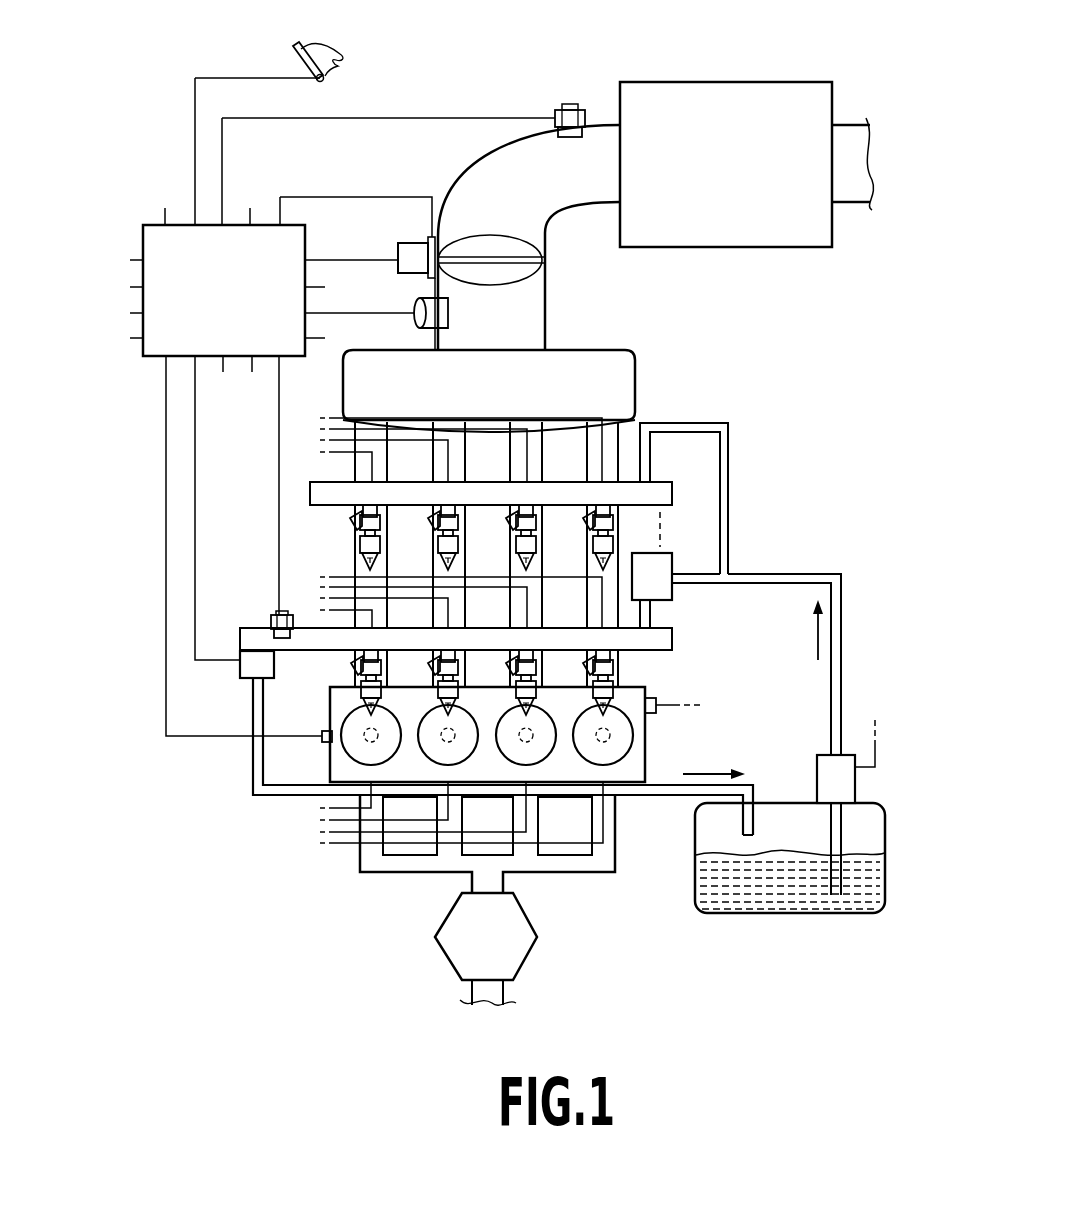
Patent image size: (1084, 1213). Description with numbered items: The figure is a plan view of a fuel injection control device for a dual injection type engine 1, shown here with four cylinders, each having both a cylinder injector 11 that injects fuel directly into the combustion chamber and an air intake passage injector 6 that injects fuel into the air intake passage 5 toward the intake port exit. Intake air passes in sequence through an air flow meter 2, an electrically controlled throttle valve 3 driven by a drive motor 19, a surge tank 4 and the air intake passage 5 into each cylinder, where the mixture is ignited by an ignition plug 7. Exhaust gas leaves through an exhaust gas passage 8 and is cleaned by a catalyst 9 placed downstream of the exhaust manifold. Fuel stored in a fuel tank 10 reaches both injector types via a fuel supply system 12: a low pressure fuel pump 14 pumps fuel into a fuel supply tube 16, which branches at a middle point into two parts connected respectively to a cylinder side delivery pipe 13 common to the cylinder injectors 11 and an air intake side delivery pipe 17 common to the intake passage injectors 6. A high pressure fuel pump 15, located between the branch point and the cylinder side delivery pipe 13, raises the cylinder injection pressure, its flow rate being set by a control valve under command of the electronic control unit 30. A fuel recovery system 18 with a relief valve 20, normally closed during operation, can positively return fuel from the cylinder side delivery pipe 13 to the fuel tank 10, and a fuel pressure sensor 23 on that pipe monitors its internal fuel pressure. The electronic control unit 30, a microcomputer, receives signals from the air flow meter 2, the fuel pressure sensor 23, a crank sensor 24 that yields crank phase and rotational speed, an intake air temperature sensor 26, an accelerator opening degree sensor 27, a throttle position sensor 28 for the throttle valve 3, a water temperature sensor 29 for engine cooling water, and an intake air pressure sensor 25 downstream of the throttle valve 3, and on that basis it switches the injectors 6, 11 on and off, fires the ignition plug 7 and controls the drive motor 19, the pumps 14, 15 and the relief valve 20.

The engine 1 is at (726, 736).
The air flow meter 2 is at (737, 82).
The electrically controlled throttle valve 3 is at (519, 268).
The surge tank 4 is at (630, 350).
The air intake passage 5 is at (622, 440).
The air intake passage injector 6 is at (358, 527).
The ignition plug 7 is at (610, 738).
The exhaust gas passage 8 is at (358, 858).
The catalyst 9 is at (538, 926).
The fuel tank 10 is at (780, 914).
The cylinder injector 11 is at (612, 688).
The fuel supply system 12 is at (857, 519).
The cylinder side delivery pipe 13 is at (673, 640).
The low pressure fuel pump 14 is at (857, 776).
The high pressure fuel pump 15 is at (675, 560).
The fuel supply tube 16 is at (843, 606).
The air intake side delivery pipe 17 is at (676, 492).
The fuel recovery system 18 is at (250, 820).
The drive motor 19 is at (398, 258).
The relief valve 20 is at (242, 676).
The fuel pressure sensor 23 is at (268, 618).
The crank sensor 24 is at (321, 734).
The intake air pressure sensor 25 is at (414, 312).
The intake air temperature sensor 26 is at (572, 104).
The accelerator opening degree sensor 27 is at (323, 82).
The throttle position sensor 28 is at (428, 240).
The water temperature sensor 29 is at (660, 704).
The electronic control unit 30 is at (143, 240).